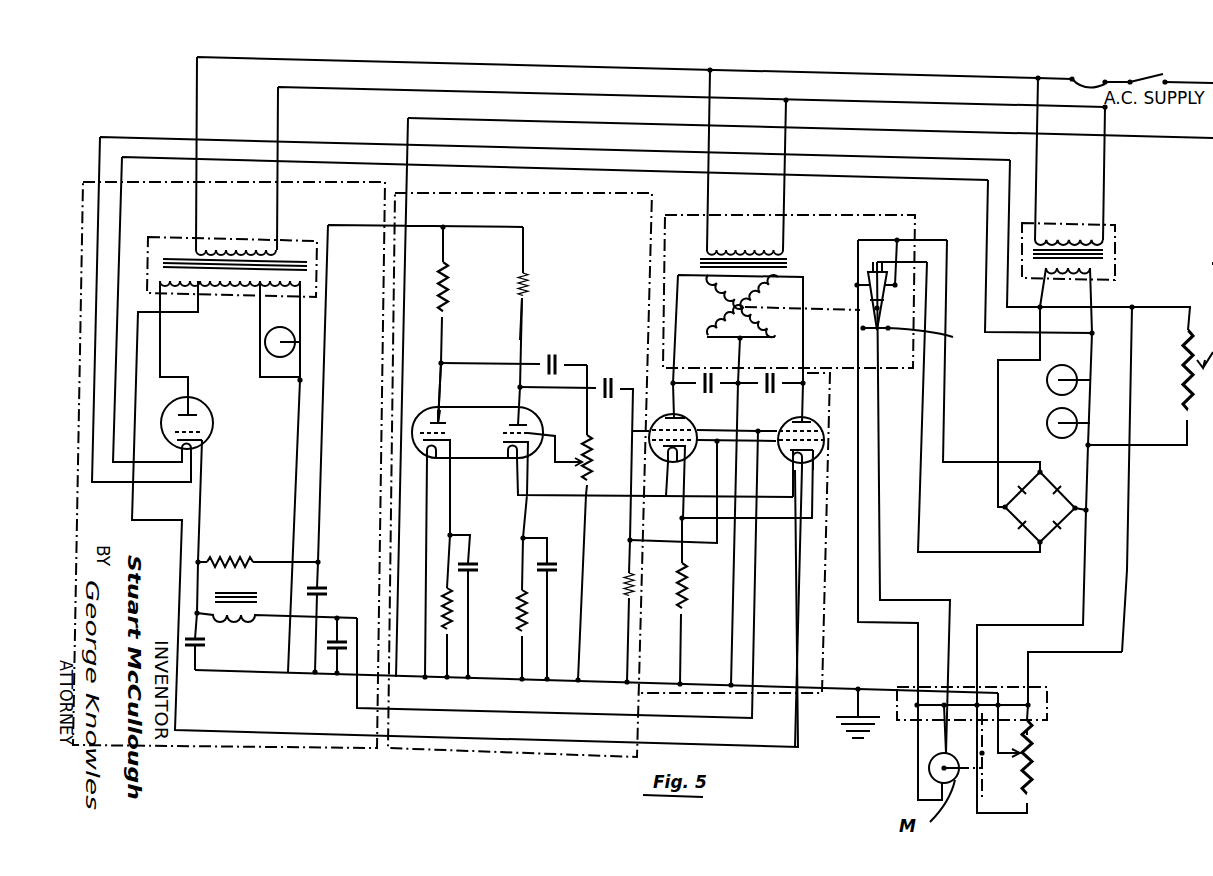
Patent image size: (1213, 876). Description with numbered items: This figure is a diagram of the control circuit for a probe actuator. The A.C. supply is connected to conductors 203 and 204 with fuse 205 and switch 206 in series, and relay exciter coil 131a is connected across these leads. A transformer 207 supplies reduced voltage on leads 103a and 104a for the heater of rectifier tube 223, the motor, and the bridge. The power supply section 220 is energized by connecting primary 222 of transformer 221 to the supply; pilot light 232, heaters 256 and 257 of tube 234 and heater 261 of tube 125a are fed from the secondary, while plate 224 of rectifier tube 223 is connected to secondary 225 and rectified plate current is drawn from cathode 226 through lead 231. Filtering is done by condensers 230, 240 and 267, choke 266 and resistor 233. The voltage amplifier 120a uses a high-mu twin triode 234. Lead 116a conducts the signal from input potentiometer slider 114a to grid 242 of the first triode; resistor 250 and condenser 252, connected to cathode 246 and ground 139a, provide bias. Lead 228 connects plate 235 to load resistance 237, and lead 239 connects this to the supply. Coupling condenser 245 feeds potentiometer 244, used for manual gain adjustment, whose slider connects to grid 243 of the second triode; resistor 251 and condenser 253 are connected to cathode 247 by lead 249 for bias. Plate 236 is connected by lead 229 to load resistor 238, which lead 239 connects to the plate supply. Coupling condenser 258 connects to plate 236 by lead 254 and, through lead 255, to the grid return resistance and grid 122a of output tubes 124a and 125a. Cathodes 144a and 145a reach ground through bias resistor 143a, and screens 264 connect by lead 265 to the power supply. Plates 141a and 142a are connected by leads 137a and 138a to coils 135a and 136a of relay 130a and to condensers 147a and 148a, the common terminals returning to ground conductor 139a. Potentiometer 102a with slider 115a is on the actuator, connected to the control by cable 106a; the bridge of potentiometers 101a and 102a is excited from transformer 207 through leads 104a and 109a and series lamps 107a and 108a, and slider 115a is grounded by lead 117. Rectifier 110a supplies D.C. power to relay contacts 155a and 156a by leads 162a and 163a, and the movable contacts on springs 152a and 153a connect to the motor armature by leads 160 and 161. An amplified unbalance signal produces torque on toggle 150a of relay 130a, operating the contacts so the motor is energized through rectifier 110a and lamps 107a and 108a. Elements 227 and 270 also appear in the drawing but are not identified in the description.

The conductor 203 is at (942, 74).
The conductor 204 is at (1008, 100).
The fuse 205 is at (1082, 73).
The switch 206 is at (1162, 73).
The transformer 207 is at (1110, 223).
The lead 116a is at (1212, 263).
The input potentiometer slider 114a is at (1184, 347).
The potentiometer 101a is at (1190, 418).
The lamp 107a is at (1046, 392).
The lamp 108a is at (1046, 435).
The rectifier 110a is at (995, 514).
The lead 109a is at (1082, 588).
The lead 104a is at (160, 484).
The lead 103a is at (117, 484).
The cable 106a is at (1048, 707).
The lead 117 is at (992, 687).
The potentiometer 102a is at (1036, 746).
The slider 115a is at (1003, 756).
The relay 130a is at (874, 212).
The relay exciter coil 131a is at (762, 247).
The coil 135a is at (729, 306).
The coil 136a is at (775, 257).
The lead 137a is at (678, 275).
The lead 138a is at (763, 277).
The condenser 147a is at (722, 364).
The condenser 148a is at (772, 366).
The plate 141a is at (603, 380).
The tube 125a is at (706, 403).
The plate 142a is at (782, 415).
The tube 124a is at (811, 422).
The grid 122a is at (818, 455).
The screens 264 is at (815, 422).
The choke 266 is at (232, 618).
The cathode 144a is at (790, 470).
The bias resistor 143a is at (684, 612).
The cathode 145a is at (605, 559).
The lead 160 is at (858, 570).
The lead 161 is at (883, 564).
The lead 162a is at (1015, 555).
The lead 163a is at (968, 468).
The relay contact 156a is at (892, 288).
The relay contact 155a is at (856, 287).
The toggle 150a is at (860, 328).
The spring 152a is at (862, 328).
The spring 153a is at (952, 337).
The ground conductor 139a is at (835, 678).
The ground 270 is at (826, 722).
The lead 265 is at (720, 683).
The heater 261 is at (680, 489).
The lead 255 is at (628, 555).
The condenser 253 is at (550, 580).
The lead 249 is at (525, 512).
The condenser 252 is at (480, 564).
The resistor 251 is at (512, 620).
The resistor 250 is at (450, 635).
The heater 256 is at (427, 458).
The heater 257 is at (512, 460).
The cathode 247 is at (510, 467).
The cathode 246 is at (420, 433).
The grid 243 is at (533, 432).
The potentiometer 244 is at (520, 470).
The grid 242 is at (444, 423).
The plate 236 is at (523, 423).
The plate 235 is at (410, 409).
The twin triode 234 is at (454, 403).
The lead 228 is at (444, 363).
The lead 229 is at (525, 315).
The load resistance 237 is at (446, 292).
The load resistor 238 is at (528, 283).
The lead 239 is at (458, 227).
The coupling condenser 245 is at (562, 341).
The lead 254 is at (537, 364).
The coupling condenser 258 is at (588, 387).
The power supply section 220 is at (286, 191).
The transformer 221 is at (172, 236).
The primary 222 is at (234, 248).
The secondary 225 is at (243, 288).
The pilot light 232 is at (268, 345).
The vacuum tube 227 is at (162, 432).
The plate 224 is at (198, 414).
The cathode 226 is at (204, 431).
The rectifier tube 223 is at (204, 446).
The lead 231 is at (204, 508).
The resistor 233 is at (236, 560).
The condenser 240 is at (318, 588).
The condenser 230 is at (204, 647).
The condenser 267 is at (308, 690).
The voltage amplifier 120a is at (563, 203).